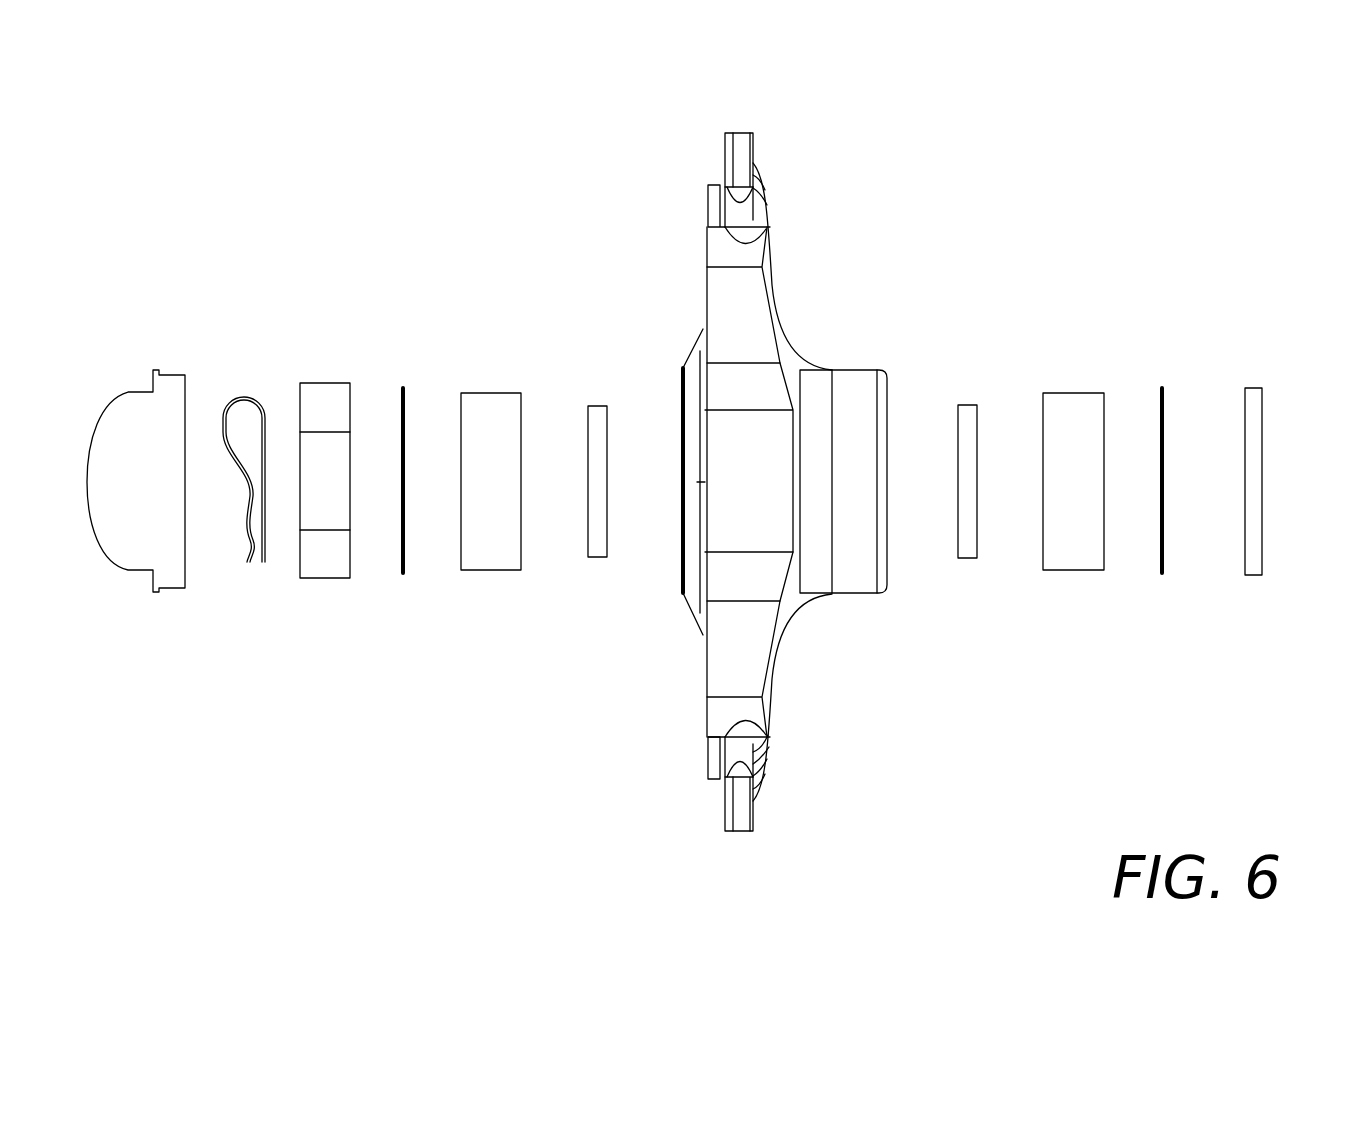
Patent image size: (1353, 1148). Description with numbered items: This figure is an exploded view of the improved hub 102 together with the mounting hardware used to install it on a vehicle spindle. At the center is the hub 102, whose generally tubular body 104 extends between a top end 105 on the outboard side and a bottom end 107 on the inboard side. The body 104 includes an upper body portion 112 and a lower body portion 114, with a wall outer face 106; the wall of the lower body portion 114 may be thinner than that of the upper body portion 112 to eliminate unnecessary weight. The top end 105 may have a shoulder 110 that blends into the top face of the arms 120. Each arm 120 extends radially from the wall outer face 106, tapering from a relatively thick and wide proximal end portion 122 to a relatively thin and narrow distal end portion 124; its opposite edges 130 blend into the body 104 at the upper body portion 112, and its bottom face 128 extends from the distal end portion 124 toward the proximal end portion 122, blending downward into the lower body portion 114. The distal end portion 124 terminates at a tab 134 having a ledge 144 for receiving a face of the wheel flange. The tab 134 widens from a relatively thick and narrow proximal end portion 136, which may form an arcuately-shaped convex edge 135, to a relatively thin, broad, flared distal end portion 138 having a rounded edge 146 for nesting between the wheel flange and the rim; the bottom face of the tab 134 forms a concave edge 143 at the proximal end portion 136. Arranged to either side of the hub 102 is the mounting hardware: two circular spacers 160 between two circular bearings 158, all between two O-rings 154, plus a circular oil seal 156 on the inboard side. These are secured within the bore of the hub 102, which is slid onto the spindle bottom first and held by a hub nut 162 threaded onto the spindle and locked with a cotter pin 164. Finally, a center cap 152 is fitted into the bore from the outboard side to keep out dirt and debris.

The hub 102 is at (957, 234).
The body 104 is at (848, 578).
The top end 105 is at (681, 403).
The wall outer face 106 is at (772, 499).
The bottom end 107 is at (890, 553).
The shoulder 110 is at (696, 355).
The upper body portion 112 is at (720, 543).
The lower body portion 114 is at (848, 369).
The arm 120 is at (704, 292).
The proximal end portion 122 is at (701, 632).
The distal end portion 124 is at (707, 724).
The bottom face 128 is at (777, 320).
The edge 130 is at (765, 354).
The tab 134 is at (740, 133).
The convex edge 135 is at (713, 757).
The proximal end portion 136 is at (741, 233).
The distal end portion 138 is at (752, 213).
The concave edge 143 is at (761, 785).
The ledge 144 is at (723, 163).
The rounded edge 146 is at (729, 143).
The center cap 152 is at (157, 370).
The O-ring 154 is at (403, 578).
The oil seal 156 is at (1255, 575).
The bearing 158 is at (491, 393).
The spacer 160 is at (597, 557).
The hub nut 162 is at (325, 383).
The cotter pin 164 is at (246, 562).